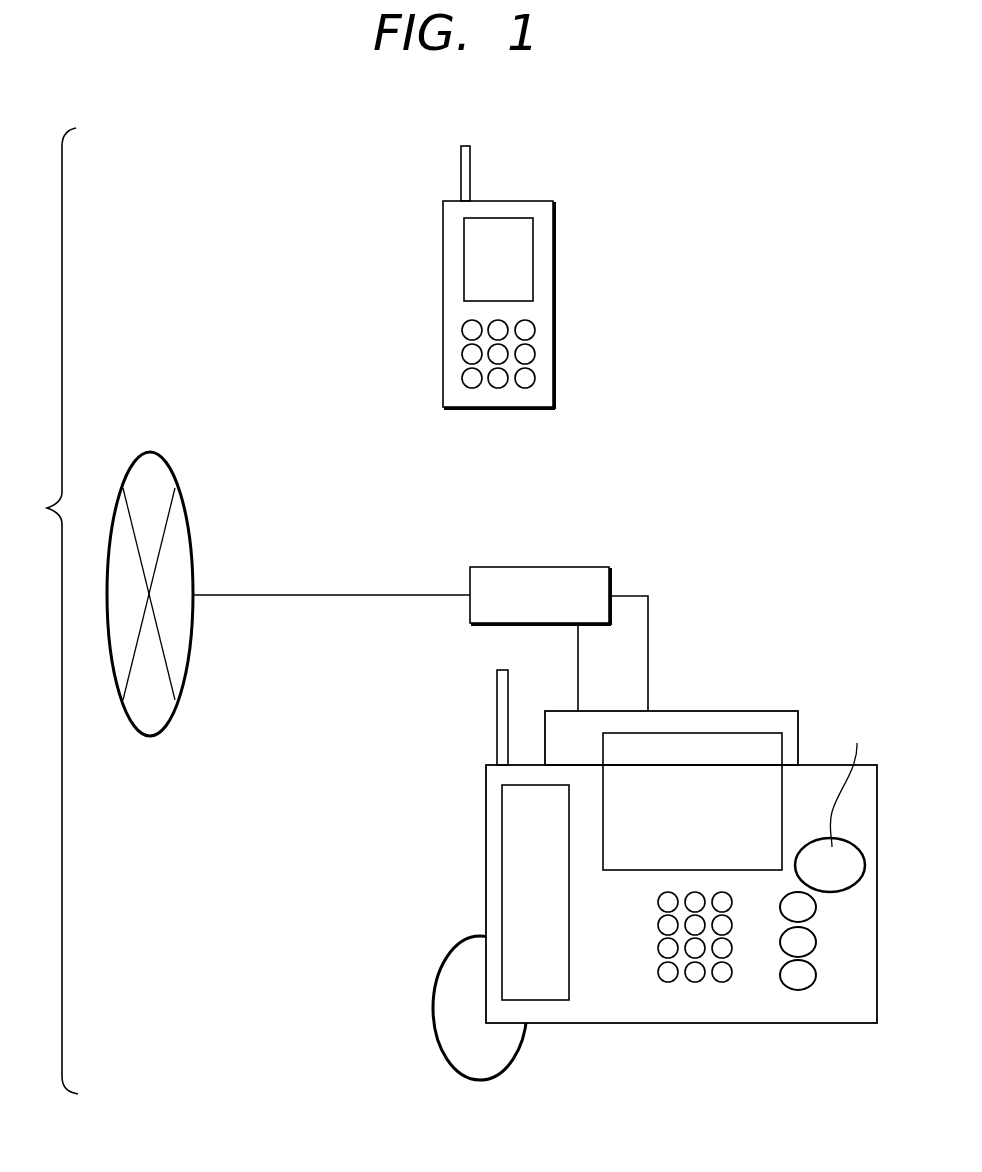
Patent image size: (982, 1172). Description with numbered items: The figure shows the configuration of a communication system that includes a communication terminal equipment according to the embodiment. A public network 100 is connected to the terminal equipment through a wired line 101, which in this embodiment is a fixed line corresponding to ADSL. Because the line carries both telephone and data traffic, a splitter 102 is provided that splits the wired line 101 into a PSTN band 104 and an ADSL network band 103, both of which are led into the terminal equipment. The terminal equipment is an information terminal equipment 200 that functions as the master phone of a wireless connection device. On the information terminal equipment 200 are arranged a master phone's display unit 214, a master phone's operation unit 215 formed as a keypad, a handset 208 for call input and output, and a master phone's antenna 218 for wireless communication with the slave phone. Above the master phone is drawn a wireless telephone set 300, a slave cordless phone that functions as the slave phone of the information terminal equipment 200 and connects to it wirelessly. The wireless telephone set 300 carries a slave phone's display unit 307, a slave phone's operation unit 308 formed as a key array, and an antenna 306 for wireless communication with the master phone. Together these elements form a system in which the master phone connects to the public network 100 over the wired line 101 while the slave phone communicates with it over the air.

The public network 100 is at (155, 738).
The wired line 101 is at (278, 594).
The splitter 102 is at (583, 567).
The ADSL network band 103 is at (578, 643).
The PSTN band 104 is at (648, 628).
The information terminal equipment 200 is at (656, 877).
The handset 208 is at (503, 798).
The master phone's display unit 214 is at (748, 742).
The master phone's operation unit 215 is at (675, 985).
The master phone's antenna 218 is at (498, 692).
The wireless telephone set 300 is at (531, 308).
The antenna 306 is at (470, 158).
The slave phone's display unit 307 is at (527, 237).
The slave phone's operation unit 308 is at (525, 352).